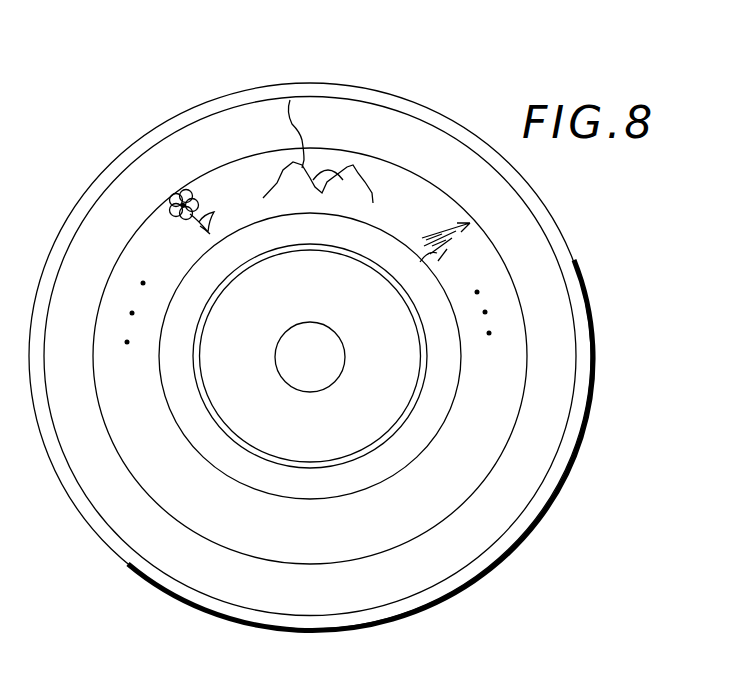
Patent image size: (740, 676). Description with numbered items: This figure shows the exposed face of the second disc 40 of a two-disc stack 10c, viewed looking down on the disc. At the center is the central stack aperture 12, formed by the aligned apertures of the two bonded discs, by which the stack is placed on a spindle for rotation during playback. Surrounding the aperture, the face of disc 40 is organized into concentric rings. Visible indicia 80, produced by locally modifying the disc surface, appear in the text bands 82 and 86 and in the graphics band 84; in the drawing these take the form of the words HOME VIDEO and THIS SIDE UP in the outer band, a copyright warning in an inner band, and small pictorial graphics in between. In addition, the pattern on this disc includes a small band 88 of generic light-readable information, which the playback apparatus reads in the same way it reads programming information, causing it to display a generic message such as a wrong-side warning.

The two-disc stack 10c is at (575, 216).
The second disc 40 is at (43, 270).
The text band 82 is at (553, 320).
The graphics band 84 is at (487, 447).
The text band 86 is at (232, 460).
The band of generic light-readable information 88 is at (205, 403).
The central stack aperture 12 is at (296, 340).
The visible indicia 80 is at (274, 135).